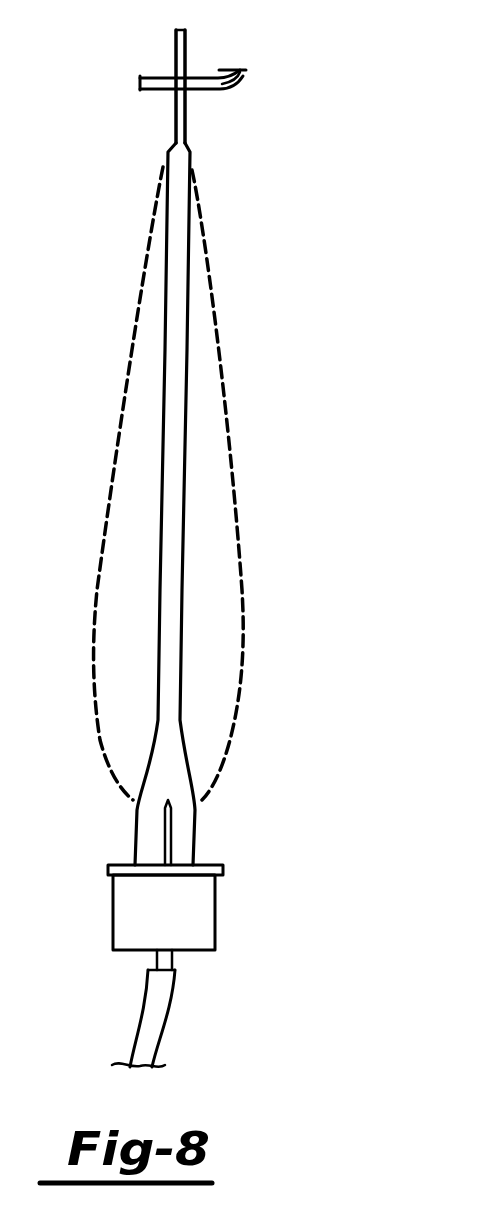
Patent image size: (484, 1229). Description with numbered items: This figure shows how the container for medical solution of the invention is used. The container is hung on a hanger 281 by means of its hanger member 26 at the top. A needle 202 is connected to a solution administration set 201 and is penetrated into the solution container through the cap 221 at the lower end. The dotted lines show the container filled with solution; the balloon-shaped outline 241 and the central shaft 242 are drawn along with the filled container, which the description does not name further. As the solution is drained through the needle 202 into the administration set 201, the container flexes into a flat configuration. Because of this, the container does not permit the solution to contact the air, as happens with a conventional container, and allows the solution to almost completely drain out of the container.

The hanger member 26 is at (188, 52).
The hanger 281 is at (220, 92).
The balloon 241 is at (222, 393).
The shaft 242 is at (183, 543).
The needle 202 is at (177, 828).
The cap 221 is at (217, 908).
The solution administration set 201 is at (168, 1012).